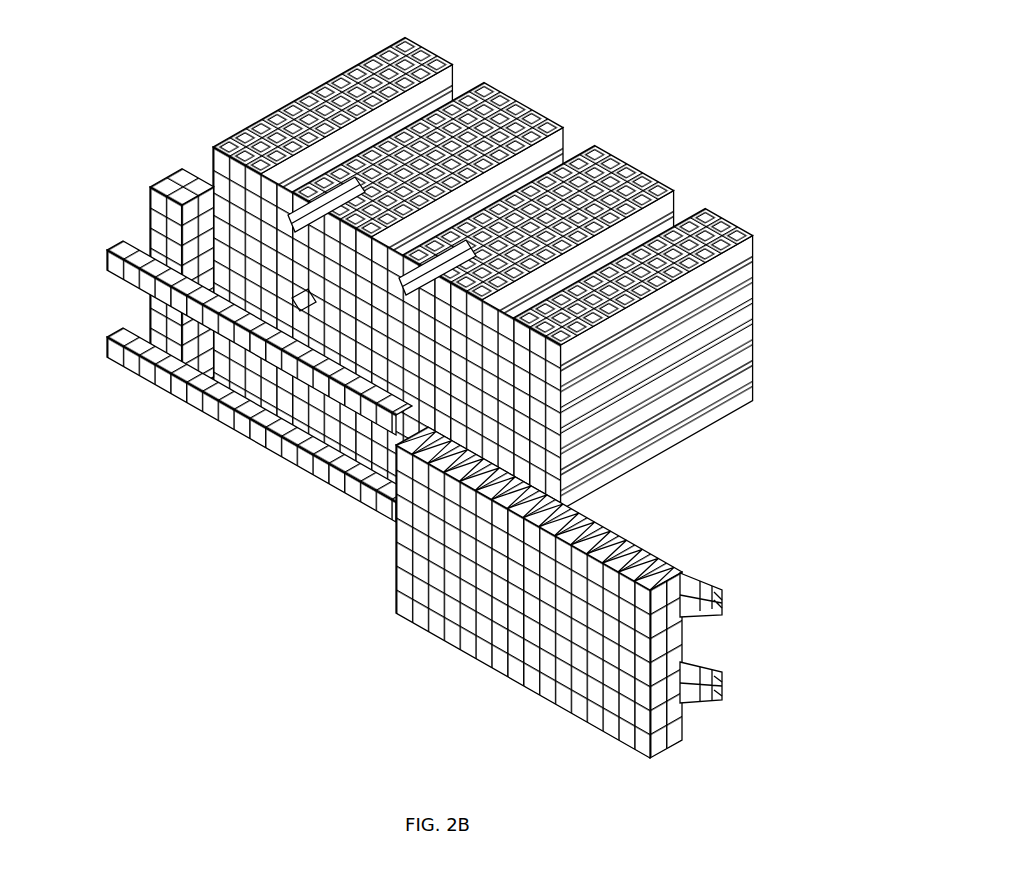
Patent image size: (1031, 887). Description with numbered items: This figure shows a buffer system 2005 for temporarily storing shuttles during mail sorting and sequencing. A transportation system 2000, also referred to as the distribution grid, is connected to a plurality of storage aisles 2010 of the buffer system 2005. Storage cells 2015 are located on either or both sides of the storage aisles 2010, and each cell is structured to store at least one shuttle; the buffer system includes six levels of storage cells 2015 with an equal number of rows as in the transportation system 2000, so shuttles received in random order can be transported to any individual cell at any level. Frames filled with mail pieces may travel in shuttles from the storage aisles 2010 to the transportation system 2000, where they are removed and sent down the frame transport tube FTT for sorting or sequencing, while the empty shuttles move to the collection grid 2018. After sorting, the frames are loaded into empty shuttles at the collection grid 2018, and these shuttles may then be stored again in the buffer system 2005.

The buffer system 2005 is at (577, 104).
The storage aisles 2010 is at (686, 211).
The storage cells 2015 is at (397, 22).
The transportation system 2000 is at (300, 302).
The collection grid 2018 is at (456, 651).
The frame transport tube FTT is at (299, 470).